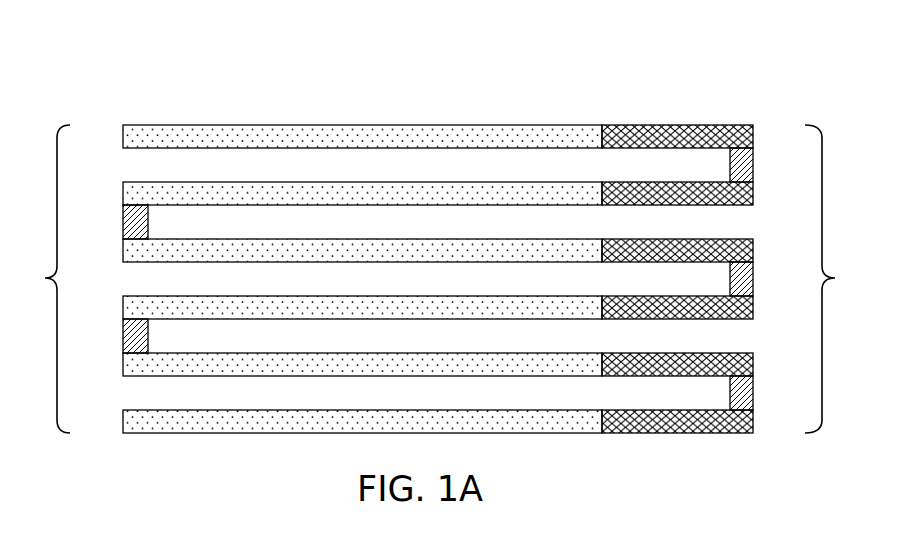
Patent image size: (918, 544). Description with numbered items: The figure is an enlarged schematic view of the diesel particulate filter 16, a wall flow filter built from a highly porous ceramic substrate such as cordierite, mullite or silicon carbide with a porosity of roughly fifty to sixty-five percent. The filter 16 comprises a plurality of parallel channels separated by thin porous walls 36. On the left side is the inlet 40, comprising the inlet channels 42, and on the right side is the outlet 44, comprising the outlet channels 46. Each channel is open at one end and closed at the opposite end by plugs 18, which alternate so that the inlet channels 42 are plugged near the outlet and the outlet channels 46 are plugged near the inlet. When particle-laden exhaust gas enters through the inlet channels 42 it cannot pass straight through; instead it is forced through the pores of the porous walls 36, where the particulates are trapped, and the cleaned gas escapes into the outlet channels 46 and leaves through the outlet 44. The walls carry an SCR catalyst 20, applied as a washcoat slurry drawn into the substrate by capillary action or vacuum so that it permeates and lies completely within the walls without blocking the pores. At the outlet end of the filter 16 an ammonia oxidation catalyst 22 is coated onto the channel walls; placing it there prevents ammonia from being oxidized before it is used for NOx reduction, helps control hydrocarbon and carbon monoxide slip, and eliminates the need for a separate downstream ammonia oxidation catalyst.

The diesel particulate filter 16 is at (166, 72).
The plugs 18 is at (125, 210).
The SCR catalyst 20 is at (252, 430).
The ammonia oxidation catalyst 22 is at (665, 430).
The porous walls 36 is at (378, 125).
The inlet 40 is at (39, 279).
The inlet channels 42 is at (130, 165).
The outlet 44 is at (838, 279).
The outlet channels 46 is at (800, 222).